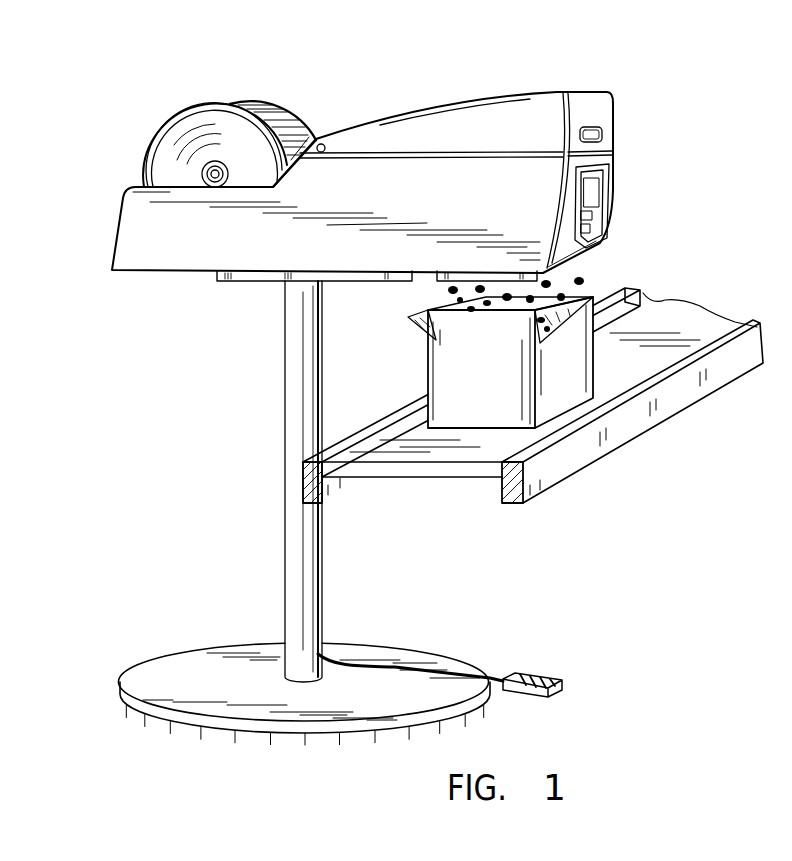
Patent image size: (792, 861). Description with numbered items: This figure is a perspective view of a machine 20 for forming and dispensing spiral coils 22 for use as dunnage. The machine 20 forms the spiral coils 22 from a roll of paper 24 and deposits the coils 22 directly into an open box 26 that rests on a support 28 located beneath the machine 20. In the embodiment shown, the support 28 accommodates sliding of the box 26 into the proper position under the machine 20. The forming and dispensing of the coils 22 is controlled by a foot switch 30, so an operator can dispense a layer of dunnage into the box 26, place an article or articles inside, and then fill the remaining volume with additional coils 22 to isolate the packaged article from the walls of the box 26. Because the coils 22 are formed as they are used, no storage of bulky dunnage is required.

The machine 20 is at (554, 91).
The spiral coils 22 is at (584, 284).
The roll of paper 24 is at (297, 127).
The open box 26 is at (446, 380).
The support 28 is at (592, 457).
The foot switch 30 is at (543, 677).